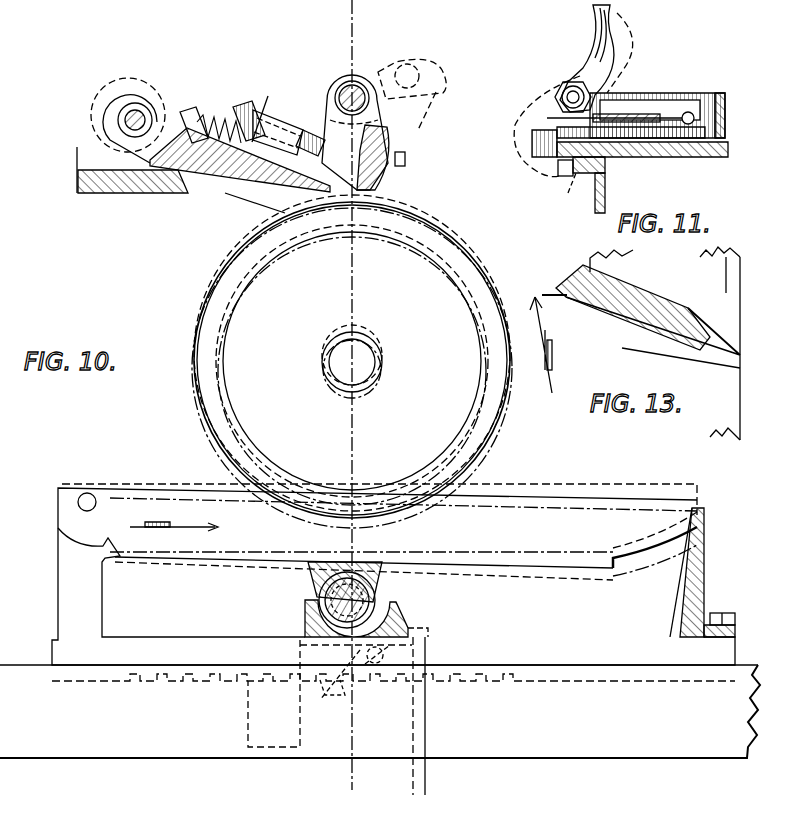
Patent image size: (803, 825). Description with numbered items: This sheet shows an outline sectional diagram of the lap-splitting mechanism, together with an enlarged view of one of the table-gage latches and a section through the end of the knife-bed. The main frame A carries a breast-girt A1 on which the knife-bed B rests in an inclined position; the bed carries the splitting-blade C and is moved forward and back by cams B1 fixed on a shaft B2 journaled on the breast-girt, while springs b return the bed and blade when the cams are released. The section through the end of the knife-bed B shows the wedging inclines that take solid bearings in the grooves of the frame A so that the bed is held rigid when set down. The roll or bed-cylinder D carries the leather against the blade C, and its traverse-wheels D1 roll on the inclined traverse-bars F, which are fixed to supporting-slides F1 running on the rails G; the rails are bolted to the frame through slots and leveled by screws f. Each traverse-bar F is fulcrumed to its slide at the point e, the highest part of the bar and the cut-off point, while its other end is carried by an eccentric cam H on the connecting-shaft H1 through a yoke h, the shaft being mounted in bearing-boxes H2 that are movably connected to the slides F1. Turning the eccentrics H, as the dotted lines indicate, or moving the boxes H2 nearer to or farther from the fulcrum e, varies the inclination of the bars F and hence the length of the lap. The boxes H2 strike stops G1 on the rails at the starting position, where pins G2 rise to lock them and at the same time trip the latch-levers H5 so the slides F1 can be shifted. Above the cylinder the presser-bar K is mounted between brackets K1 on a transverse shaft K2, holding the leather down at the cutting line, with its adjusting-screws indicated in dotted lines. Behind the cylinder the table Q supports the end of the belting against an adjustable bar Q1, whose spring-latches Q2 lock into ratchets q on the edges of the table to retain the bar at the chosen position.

In FIG. 13, the main frame A is at (635, 343).
In FIG. 10, the breast-girt A1 is at (119, 172).
In FIG. 10, the knife-bed B is at (240, 174).
In FIG. 13, the knife-bed B is at (586, 283).
In FIG. 10, the cams B1 is at (112, 118).
In FIG. 10, the cam shaft B2 is at (137, 113).
In FIG. 10, the springs b is at (216, 118).
In FIG. 10, the splitting-blade C is at (288, 137).
In FIG. 10, the bed-cylinder D is at (339, 361).
In FIG. 10, the traverse-wheels D1 is at (352, 365).
In FIG. 10, the fulcrum point e is at (88, 493).
In FIG. 10, the leveling-screws f is at (265, 205).
In FIG. 10, the traverse-bars F is at (393, 574).
In FIG. 10, the supporting-slides F1 is at (379, 650).
In FIG. 10, the rails or guideways G is at (380, 711).
In FIG. 10, the stops G1 is at (248, 680).
In FIG. 10, the locking pins or bolts G2 is at (435, 716).
In FIG. 10, the yoke h is at (337, 582).
In FIG. 10, the eccentric cams H is at (312, 594).
In FIG. 10, the connecting-shaft H1 is at (375, 598).
In FIG. 10, the bearing-boxes H2 is at (304, 612).
In FIG. 10, the latch-levers H5 is at (413, 625).
In FIG. 10, the presser-bar K is at (388, 137).
In FIG. 10, the brackets K1 is at (355, 132).
In FIG. 10, the transverse shaft K2 is at (340, 93).
In FIG. 11, the table Q is at (728, 150).
In FIG. 11, the adjustable bar Q1 is at (628, 109).
In FIG. 11, the spring-latches Q2 is at (523, 150).
In FIG. 11, the ratchets q is at (566, 195).